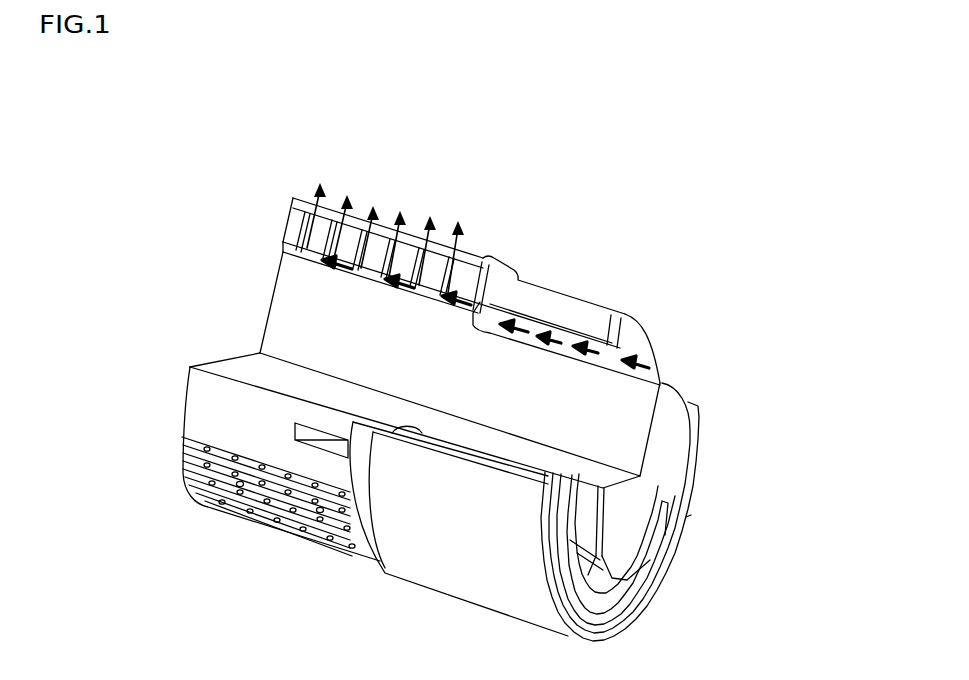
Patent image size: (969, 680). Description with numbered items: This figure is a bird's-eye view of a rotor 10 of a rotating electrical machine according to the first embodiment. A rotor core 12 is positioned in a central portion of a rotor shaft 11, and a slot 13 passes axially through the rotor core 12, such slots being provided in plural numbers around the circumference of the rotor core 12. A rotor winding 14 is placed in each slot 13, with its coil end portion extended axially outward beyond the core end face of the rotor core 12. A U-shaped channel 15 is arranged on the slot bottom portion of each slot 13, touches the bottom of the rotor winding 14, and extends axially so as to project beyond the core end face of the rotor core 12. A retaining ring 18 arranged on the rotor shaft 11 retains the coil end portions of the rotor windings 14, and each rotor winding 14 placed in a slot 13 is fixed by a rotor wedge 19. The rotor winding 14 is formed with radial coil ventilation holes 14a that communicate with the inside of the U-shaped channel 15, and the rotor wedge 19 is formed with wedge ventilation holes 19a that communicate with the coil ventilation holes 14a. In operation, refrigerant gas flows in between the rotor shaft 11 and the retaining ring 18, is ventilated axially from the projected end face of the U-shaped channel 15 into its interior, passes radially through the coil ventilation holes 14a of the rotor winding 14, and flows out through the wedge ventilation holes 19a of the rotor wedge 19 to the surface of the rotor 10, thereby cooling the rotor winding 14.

The rotor 10 is at (513, 275).
The rotor shaft 11 is at (670, 480).
The rotor core 12 is at (213, 423).
The slot 13 is at (187, 437).
The rotor winding 14 is at (297, 228).
The coil ventilation hole 14a is at (352, 235).
The U-shaped channel 15 is at (303, 255).
The retaining ring 18 is at (472, 562).
The rotor wedge 19 is at (200, 475).
The wedge ventilation hole 19a is at (240, 482).